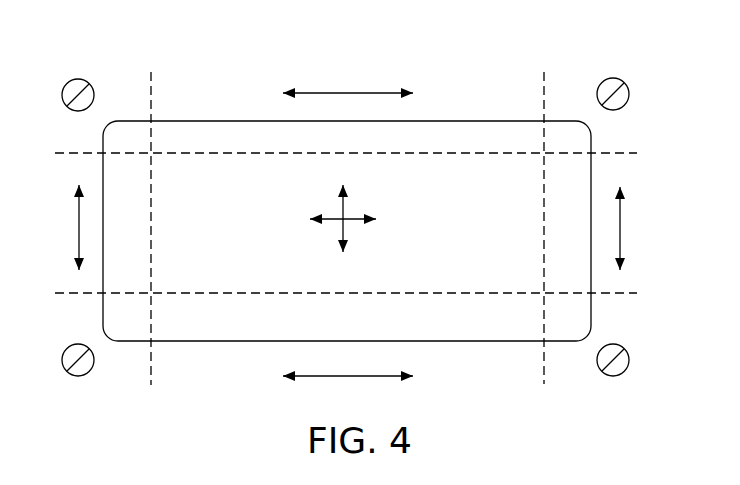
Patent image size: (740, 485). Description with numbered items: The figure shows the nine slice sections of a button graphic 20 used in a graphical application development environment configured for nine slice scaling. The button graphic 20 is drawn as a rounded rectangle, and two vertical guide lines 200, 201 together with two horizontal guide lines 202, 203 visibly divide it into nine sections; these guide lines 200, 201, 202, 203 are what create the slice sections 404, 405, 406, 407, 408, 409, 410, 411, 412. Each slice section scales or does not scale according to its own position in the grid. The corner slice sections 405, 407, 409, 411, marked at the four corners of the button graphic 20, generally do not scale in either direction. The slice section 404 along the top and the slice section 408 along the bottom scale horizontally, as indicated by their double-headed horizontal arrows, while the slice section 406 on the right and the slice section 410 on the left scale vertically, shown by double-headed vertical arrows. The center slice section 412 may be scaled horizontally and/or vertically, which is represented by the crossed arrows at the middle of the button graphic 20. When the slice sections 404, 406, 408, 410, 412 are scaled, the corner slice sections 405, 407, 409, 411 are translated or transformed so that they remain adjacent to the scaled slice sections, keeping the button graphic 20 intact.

The button graphic 20 is at (592, 40).
The guide line 200 is at (151, 218).
The guide line 201 is at (545, 218).
The guide line 202 is at (364, 153).
The guide line 203 is at (364, 293).
The slice section 404 is at (348, 78).
The corner slice section 405 is at (626, 86).
The slice section 406 is at (640, 228).
The corner slice section 407 is at (628, 368).
The slice section 408 is at (348, 362).
The corner slice section 409 is at (61, 370).
The slice section 410 is at (56, 227).
The corner slice section 411 is at (60, 89).
The slice section 412 is at (452, 215).